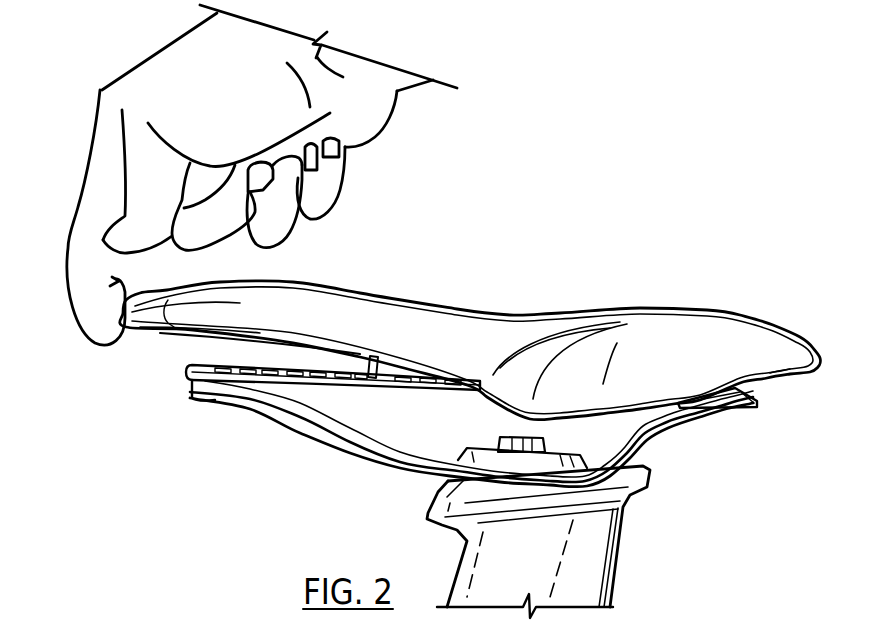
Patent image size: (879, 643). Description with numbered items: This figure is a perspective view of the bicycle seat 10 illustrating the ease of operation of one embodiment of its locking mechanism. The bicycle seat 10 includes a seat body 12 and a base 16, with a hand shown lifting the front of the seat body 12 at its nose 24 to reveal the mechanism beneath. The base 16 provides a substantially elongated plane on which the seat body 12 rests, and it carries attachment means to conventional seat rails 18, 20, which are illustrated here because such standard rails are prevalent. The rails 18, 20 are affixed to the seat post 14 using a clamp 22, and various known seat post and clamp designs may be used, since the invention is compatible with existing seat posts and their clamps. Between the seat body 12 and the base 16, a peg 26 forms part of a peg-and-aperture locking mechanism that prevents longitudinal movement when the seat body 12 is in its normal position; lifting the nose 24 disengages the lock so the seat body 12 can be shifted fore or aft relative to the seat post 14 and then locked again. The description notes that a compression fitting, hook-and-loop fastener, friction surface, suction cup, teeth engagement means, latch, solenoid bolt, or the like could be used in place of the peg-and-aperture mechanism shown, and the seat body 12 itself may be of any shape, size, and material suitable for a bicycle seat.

The bicycle seat 10 is at (481, 275).
The seat body 12 is at (647, 334).
The seat post 14 is at (583, 557).
The base 16 is at (723, 396).
The rail 18 is at (668, 434).
The rail 20 is at (471, 437).
The clamp 22 is at (476, 448).
The nose 24 is at (200, 308).
The peg 26 is at (371, 372).